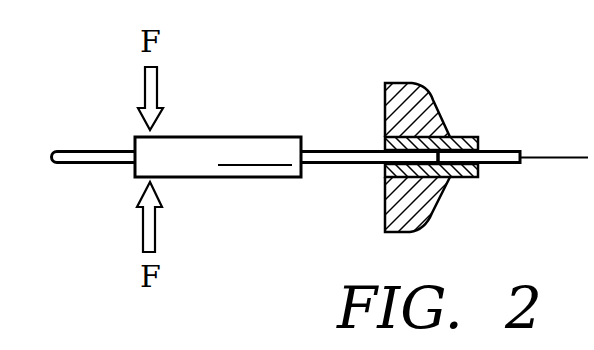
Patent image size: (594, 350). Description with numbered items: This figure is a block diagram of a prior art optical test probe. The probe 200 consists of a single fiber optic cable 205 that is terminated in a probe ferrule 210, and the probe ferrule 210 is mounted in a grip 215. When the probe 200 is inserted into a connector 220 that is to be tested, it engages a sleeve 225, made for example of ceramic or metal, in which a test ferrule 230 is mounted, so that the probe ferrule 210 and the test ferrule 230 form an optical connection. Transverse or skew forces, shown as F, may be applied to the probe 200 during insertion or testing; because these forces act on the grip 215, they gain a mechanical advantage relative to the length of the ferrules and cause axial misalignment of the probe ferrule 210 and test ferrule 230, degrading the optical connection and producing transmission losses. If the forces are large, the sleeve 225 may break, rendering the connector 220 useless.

The probe 200 is at (238, 197).
The fiber optic cable 205 is at (73, 150).
The probe ferrule 210 is at (333, 150).
The grip 215 is at (213, 137).
The connector 220 is at (400, 83).
The sleeve 225 is at (452, 178).
The test ferrule 230 is at (508, 151).